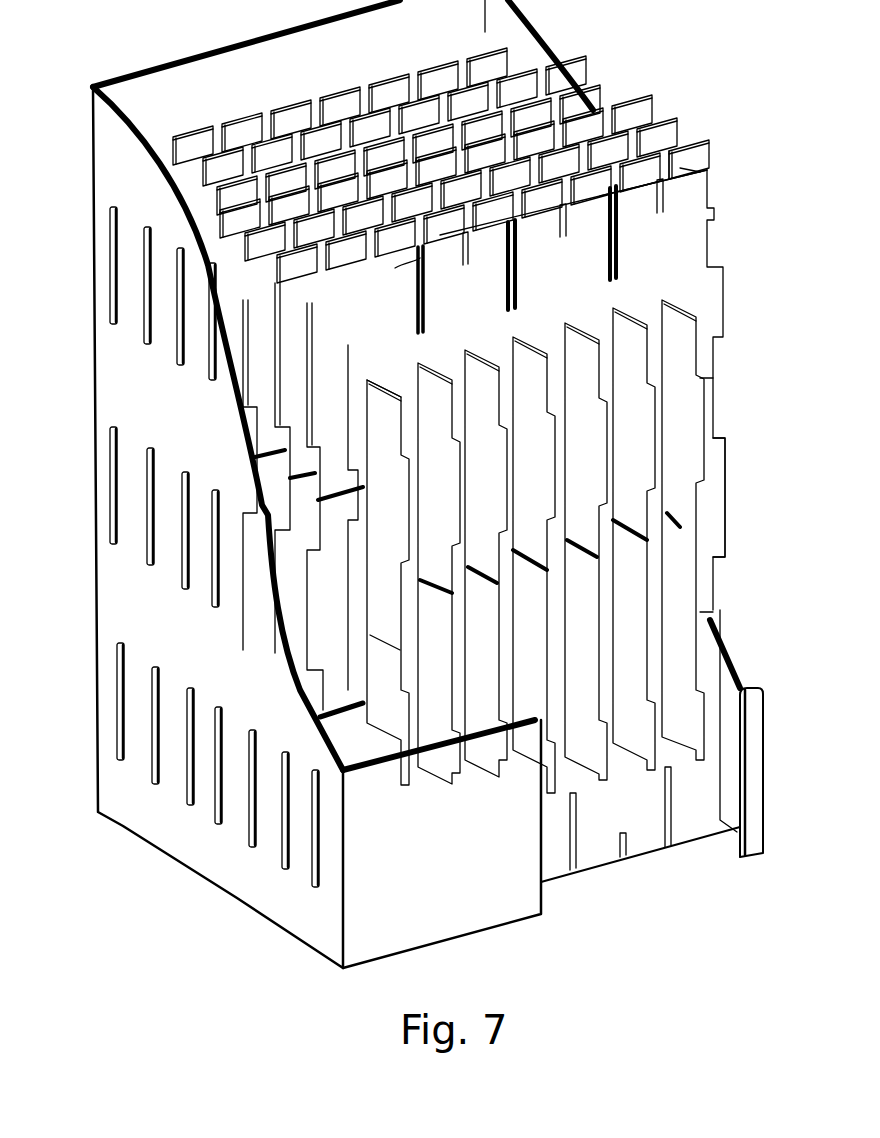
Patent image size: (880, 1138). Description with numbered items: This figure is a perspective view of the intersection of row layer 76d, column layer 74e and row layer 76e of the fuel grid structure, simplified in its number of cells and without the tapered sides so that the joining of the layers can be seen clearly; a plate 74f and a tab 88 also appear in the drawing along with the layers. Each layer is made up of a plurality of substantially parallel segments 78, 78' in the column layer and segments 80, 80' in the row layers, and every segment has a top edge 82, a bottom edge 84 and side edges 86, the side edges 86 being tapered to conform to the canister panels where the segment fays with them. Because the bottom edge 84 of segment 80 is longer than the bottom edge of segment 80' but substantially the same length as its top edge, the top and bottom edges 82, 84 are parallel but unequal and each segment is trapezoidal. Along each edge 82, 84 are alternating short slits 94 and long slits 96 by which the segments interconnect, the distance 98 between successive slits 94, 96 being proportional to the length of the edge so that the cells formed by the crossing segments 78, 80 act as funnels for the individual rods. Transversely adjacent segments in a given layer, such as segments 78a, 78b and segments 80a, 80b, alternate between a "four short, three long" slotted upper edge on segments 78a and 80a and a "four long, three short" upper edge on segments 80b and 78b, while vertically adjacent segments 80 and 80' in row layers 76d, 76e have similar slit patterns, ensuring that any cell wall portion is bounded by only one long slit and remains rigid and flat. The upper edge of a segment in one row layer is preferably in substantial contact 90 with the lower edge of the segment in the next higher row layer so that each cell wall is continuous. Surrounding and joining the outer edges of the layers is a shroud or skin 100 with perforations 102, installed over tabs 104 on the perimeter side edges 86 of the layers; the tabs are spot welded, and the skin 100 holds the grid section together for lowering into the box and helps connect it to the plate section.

The shroud or skin 100 is at (94, 172).
The perforations 102 is at (122, 326).
The tabs 104 is at (116, 262).
The column layer 74e is at (723, 378).
The plate 74f is at (723, 615).
The row layer 76d is at (712, 238).
The row layer 76e is at (733, 470).
The segment 78 is at (537, 546).
The segment 78a is at (370, 412).
The segment 78b is at (428, 383).
The segment 78' is at (500, 615).
The segment 80 is at (562, 251).
The segment 80' is at (309, 542).
The segment 80a is at (712, 178).
The segment 80b is at (666, 152).
The top edge 82 is at (688, 168).
The bottom edge 84 is at (358, 500).
The side edges 86 is at (322, 482).
The tab 88 is at (372, 384).
The contact 90 is at (376, 638).
The short slit 94 is at (420, 258).
The long slit 96 is at (312, 265).
The distance 98 is at (402, 270).